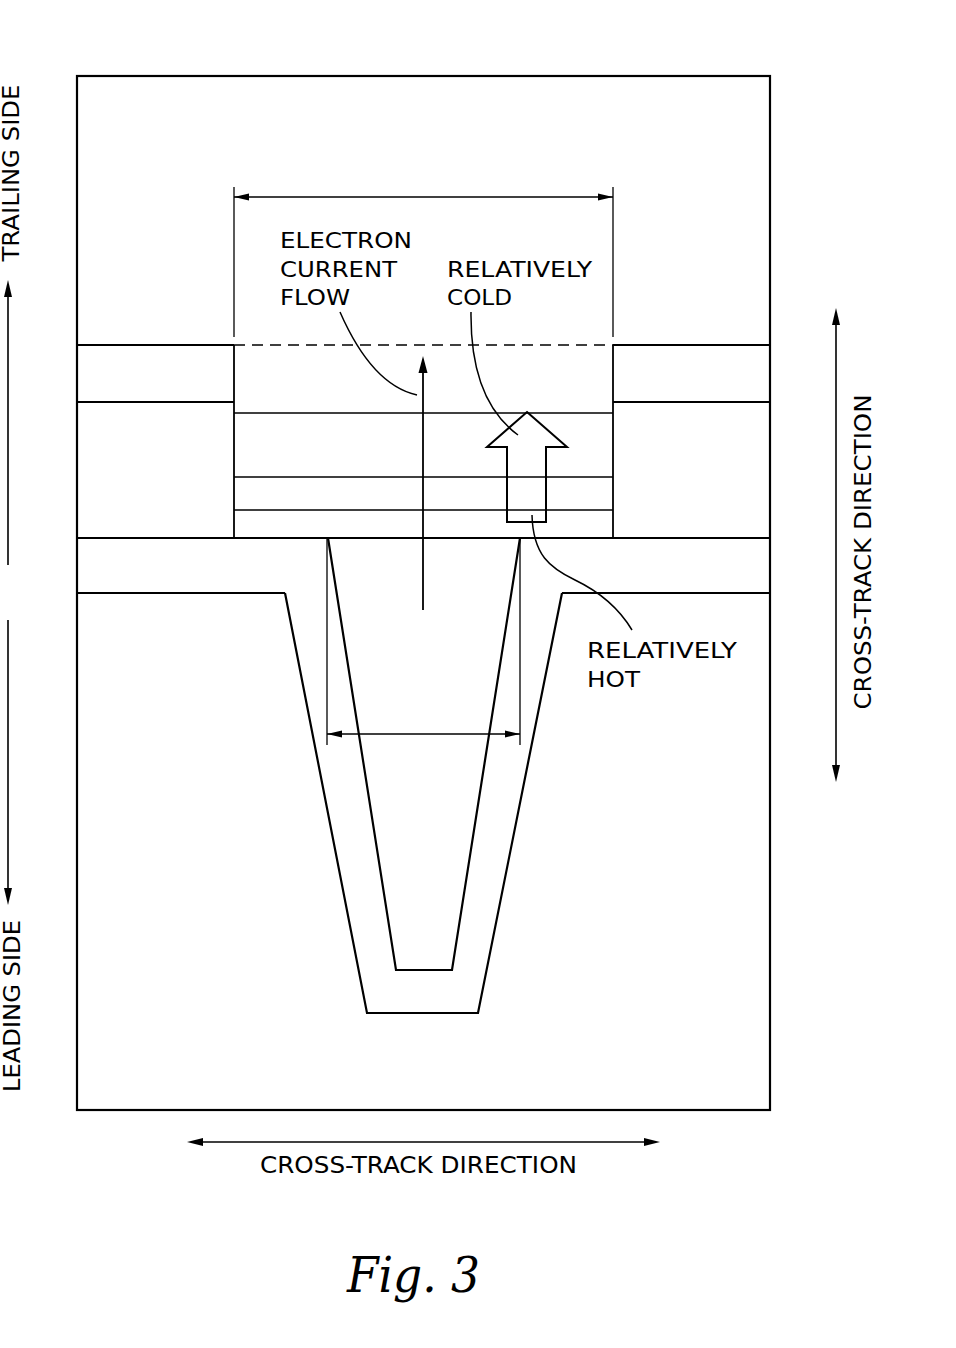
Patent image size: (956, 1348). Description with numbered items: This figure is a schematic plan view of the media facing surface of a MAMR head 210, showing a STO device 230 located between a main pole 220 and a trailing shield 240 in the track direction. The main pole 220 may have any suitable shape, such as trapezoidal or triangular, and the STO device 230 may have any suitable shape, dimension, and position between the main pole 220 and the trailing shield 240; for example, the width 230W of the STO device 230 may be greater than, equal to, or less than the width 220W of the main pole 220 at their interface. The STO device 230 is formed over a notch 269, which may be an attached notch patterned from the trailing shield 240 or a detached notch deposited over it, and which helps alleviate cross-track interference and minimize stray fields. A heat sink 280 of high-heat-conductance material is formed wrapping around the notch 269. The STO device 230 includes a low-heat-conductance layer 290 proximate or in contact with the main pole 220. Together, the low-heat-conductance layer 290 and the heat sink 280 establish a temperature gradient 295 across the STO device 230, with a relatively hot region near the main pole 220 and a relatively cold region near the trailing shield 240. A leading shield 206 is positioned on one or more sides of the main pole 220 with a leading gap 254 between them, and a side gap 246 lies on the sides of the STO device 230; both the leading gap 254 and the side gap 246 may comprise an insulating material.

The MAMR head 210 is at (165, 28).
The trailing shield 240 is at (714, 156).
The heat sink 280 is at (714, 388).
The notch 269 is at (546, 387).
The side gap 246 is at (714, 478).
The STO device 230 is at (222, 407).
The low-heat-conductance layer 290 is at (343, 508).
The temperature gradient 295 is at (515, 493).
The leading gap 254 is at (714, 581).
The leading shield 206 is at (713, 863).
The main pole 220 is at (444, 861).
The width of the STO device 230W is at (412, 197).
The width of the main pole 220W is at (412, 734).